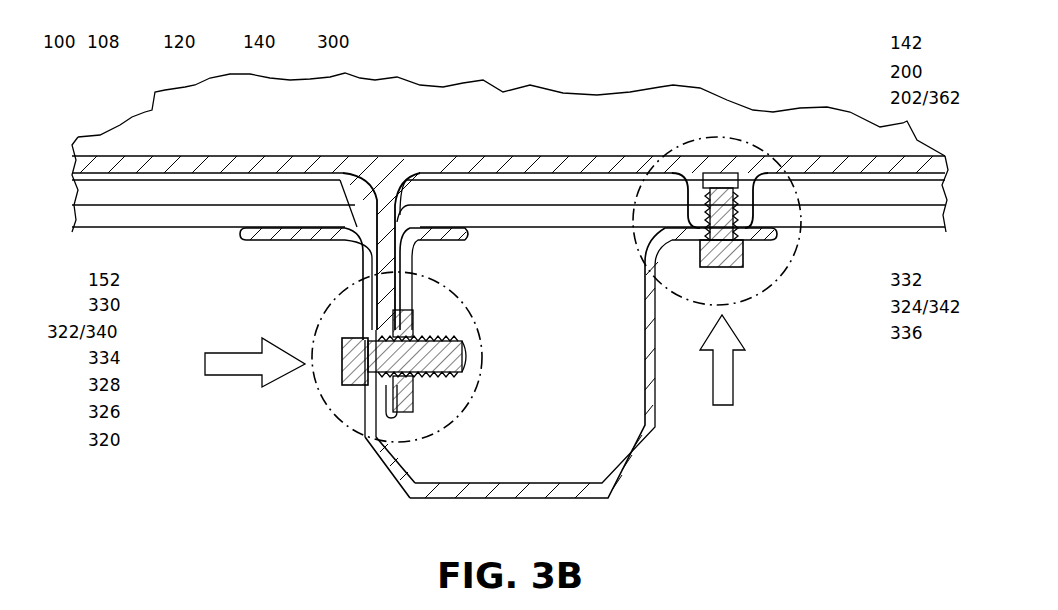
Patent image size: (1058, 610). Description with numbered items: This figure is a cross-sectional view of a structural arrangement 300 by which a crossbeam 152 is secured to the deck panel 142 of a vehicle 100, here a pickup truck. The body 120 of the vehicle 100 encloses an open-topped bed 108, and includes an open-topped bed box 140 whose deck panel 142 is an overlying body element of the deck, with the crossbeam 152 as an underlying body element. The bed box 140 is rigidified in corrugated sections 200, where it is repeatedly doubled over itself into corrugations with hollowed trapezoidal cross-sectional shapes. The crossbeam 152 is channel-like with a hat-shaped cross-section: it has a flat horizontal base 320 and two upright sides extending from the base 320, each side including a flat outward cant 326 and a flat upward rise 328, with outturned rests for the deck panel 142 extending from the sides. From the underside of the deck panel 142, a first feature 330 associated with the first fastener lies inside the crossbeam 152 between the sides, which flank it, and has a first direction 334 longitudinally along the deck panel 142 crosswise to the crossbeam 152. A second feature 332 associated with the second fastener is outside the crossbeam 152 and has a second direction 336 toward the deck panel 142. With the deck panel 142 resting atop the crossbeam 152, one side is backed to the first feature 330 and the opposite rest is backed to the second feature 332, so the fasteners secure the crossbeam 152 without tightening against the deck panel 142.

The vehicle 100 is at (78, 133).
The open-topped bed 108 is at (151, 153).
The body 120 is at (229, 153).
The bed box 140 is at (303, 156).
The deck panel 142 is at (802, 156).
The crossbeam 152 is at (375, 283).
The corrugated section 200 is at (822, 156).
The structural arrangement 300 is at (430, 152).
The base 320 is at (405, 497).
The outward cant 326 is at (392, 470).
The upward rise 328 is at (367, 403).
The first feature 330 is at (365, 305).
The second feature 332 is at (765, 195).
The first direction 334 is at (255, 348).
The second direction 336 is at (735, 370).